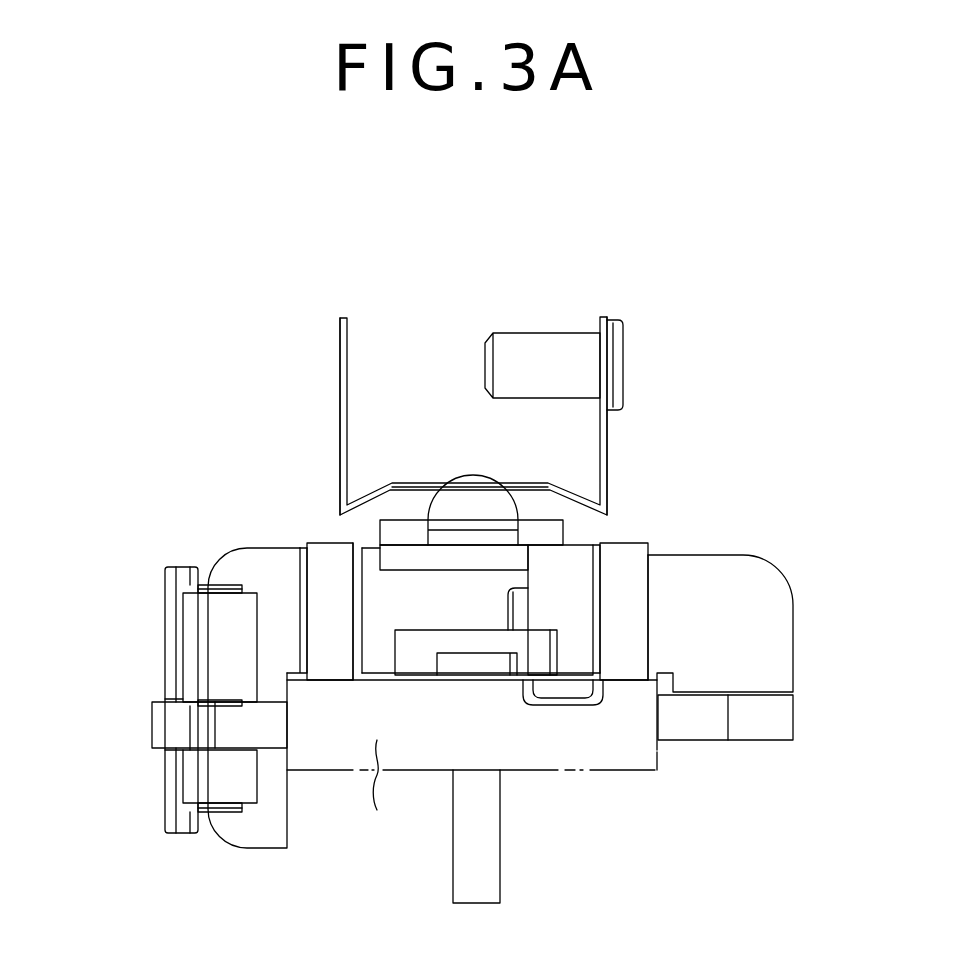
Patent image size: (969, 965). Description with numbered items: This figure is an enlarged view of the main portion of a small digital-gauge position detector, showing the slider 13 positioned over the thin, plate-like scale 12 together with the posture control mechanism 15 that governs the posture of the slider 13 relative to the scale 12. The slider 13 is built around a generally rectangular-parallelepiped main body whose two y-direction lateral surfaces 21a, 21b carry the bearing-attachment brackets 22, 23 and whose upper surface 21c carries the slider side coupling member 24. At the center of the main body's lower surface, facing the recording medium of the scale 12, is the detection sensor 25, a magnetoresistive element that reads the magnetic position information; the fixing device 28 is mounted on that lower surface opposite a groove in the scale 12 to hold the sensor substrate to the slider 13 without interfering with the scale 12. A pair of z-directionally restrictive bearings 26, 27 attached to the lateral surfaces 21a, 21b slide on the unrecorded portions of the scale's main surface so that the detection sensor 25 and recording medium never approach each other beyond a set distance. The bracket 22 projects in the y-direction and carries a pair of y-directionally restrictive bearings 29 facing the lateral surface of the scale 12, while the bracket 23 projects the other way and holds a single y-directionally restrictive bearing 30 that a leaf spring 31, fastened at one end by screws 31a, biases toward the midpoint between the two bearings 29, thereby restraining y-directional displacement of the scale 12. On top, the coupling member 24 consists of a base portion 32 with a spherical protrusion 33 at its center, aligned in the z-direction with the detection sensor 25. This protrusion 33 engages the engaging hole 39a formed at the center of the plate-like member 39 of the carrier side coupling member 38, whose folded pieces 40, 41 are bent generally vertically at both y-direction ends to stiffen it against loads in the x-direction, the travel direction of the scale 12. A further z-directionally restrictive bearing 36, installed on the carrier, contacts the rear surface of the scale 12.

The scale 12 is at (472, 765).
The slider 13 is at (229, 441).
The posture control mechanism 15 is at (663, 371).
The lateral surface 21a is at (600, 588).
The lateral surface 21b is at (355, 590).
The upper surface 21c is at (366, 548).
The bearing-attachment bracket 22 is at (755, 577).
The bearing-attachment bracket 23 is at (240, 563).
The slider side coupling member 24 is at (400, 530).
The detection sensor 25 is at (492, 665).
The z-directionally restrictive bearing 26 is at (628, 555).
The z-directionally restrictive bearing 27 is at (317, 598).
The fixing device 28 is at (567, 692).
The y-directionally restrictive bearing 29 is at (763, 717).
The y-directionally restrictive bearing 30 is at (173, 725).
The leaf spring 31 is at (200, 657).
The screw 31a is at (168, 607).
The base portion 32 is at (545, 530).
The spherical protrusion 33 is at (482, 498).
The z-directionally restrictive bearing 36 is at (485, 867).
The carrier side coupling member 38 is at (474, 366).
The plate-like member 39 is at (400, 483).
The engaging hole 39a is at (417, 485).
The folded piece 40 is at (342, 333).
The folded piece 41 is at (607, 435).